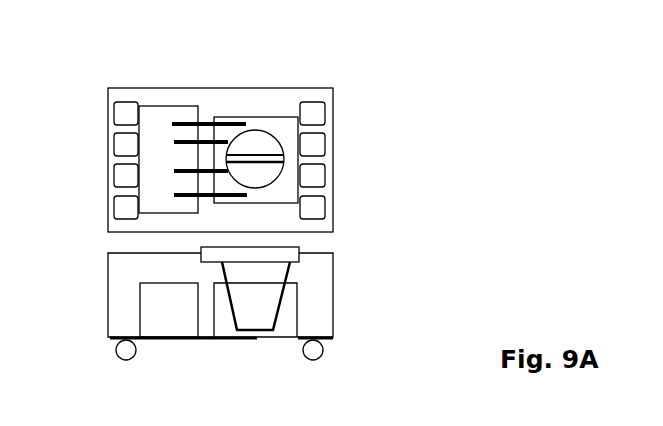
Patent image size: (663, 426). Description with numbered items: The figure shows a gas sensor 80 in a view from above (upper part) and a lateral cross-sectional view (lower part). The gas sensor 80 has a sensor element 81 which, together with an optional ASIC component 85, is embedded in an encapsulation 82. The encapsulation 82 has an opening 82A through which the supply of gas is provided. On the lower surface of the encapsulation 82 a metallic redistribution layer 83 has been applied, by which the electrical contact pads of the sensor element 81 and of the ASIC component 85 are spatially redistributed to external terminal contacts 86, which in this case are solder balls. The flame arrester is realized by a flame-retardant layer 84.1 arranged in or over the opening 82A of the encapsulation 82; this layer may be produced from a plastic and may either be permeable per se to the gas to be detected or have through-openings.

The gas sensor 80 is at (410, 53).
The sensor element 81 is at (287, 123).
The encapsulation 82 is at (270, 95).
The opening 82A is at (284, 272).
The redistribution layer 83 is at (218, 341).
The flame-retardant layer 84.1 is at (305, 262).
The ASIC component 85 is at (180, 110).
The external terminal contacts 86 is at (118, 356).